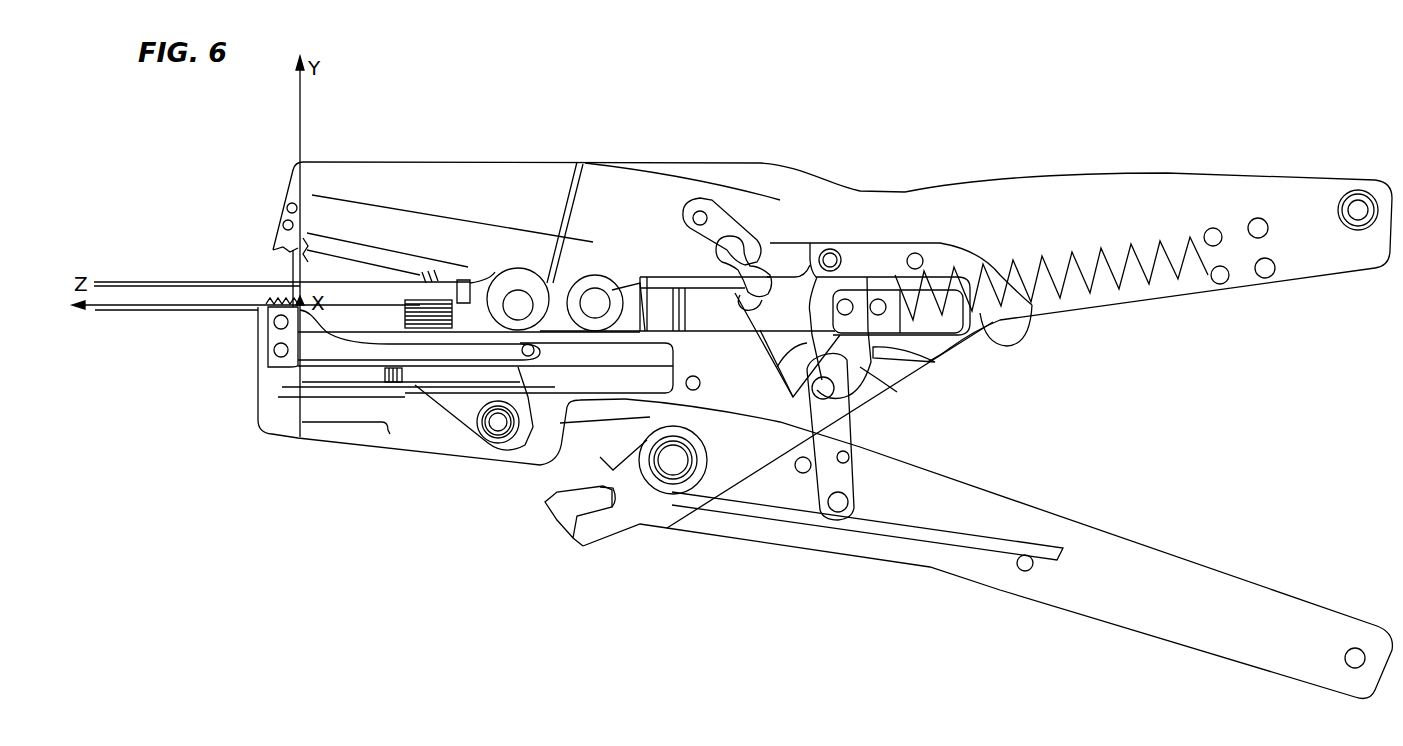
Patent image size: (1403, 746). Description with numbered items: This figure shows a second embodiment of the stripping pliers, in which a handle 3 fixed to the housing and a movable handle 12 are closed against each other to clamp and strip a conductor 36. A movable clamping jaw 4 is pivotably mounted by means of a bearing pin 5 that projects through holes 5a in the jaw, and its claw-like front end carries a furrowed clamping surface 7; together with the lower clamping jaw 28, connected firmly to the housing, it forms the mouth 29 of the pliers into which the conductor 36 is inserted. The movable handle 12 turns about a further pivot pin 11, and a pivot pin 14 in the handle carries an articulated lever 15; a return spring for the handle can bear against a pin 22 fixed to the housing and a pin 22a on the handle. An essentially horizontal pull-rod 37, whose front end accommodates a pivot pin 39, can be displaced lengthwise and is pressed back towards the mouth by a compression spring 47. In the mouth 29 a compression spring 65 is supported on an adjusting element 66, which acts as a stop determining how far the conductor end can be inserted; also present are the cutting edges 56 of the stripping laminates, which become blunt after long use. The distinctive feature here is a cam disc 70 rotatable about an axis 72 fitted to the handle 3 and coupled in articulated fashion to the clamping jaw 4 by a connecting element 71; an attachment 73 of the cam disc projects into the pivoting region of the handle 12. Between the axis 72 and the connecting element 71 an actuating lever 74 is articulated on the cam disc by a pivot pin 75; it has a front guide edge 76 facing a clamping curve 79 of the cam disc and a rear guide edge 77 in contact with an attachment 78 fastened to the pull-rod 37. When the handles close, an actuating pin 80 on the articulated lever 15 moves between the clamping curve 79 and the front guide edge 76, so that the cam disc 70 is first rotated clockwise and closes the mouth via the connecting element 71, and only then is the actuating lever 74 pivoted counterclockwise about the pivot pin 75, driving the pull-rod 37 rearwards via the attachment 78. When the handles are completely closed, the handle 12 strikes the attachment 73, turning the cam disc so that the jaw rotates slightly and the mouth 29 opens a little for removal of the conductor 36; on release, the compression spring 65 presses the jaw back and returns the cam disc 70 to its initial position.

The handle fixed to the housing 3 is at (1318, 195).
The movable clamping jaw 4 is at (338, 175).
The bearing pin 5 is at (595, 300).
The holes 5a is at (605, 296).
The clamping surface 7 is at (988, 543).
The further pivot pin 11 is at (672, 465).
The movable handle 12 is at (1317, 607).
The pivot pin 14 is at (840, 512).
The articulated lever 15 is at (863, 483).
The pin fixed to the housing 22 is at (697, 392).
The pin on the movable handle 22a is at (1025, 572).
The lower clamping jaw 28 is at (287, 440).
The mouth of the pliers 29 is at (265, 270).
The conductor 36 is at (145, 296).
The pull-rod 37 is at (700, 300).
The pivot pin 39 is at (515, 300).
The compression spring 47 is at (1163, 240).
The cutting edges 56 is at (733, 214).
The compression spring 65 is at (422, 298).
The adjusting element 66 is at (430, 318).
The cam disc 70 is at (828, 258).
The connecting element 71 is at (738, 250).
The axis 72 is at (915, 257).
The attachment 73 is at (1017, 332).
The actuating lever 74 is at (870, 405).
The pivot pin 75 is at (845, 302).
The front guide edge 76 is at (783, 360).
The rear guide edge 77 is at (917, 348).
The attachment 78 is at (880, 302).
The clamping curve 79 is at (897, 392).
The actuating pin 80 is at (813, 410).